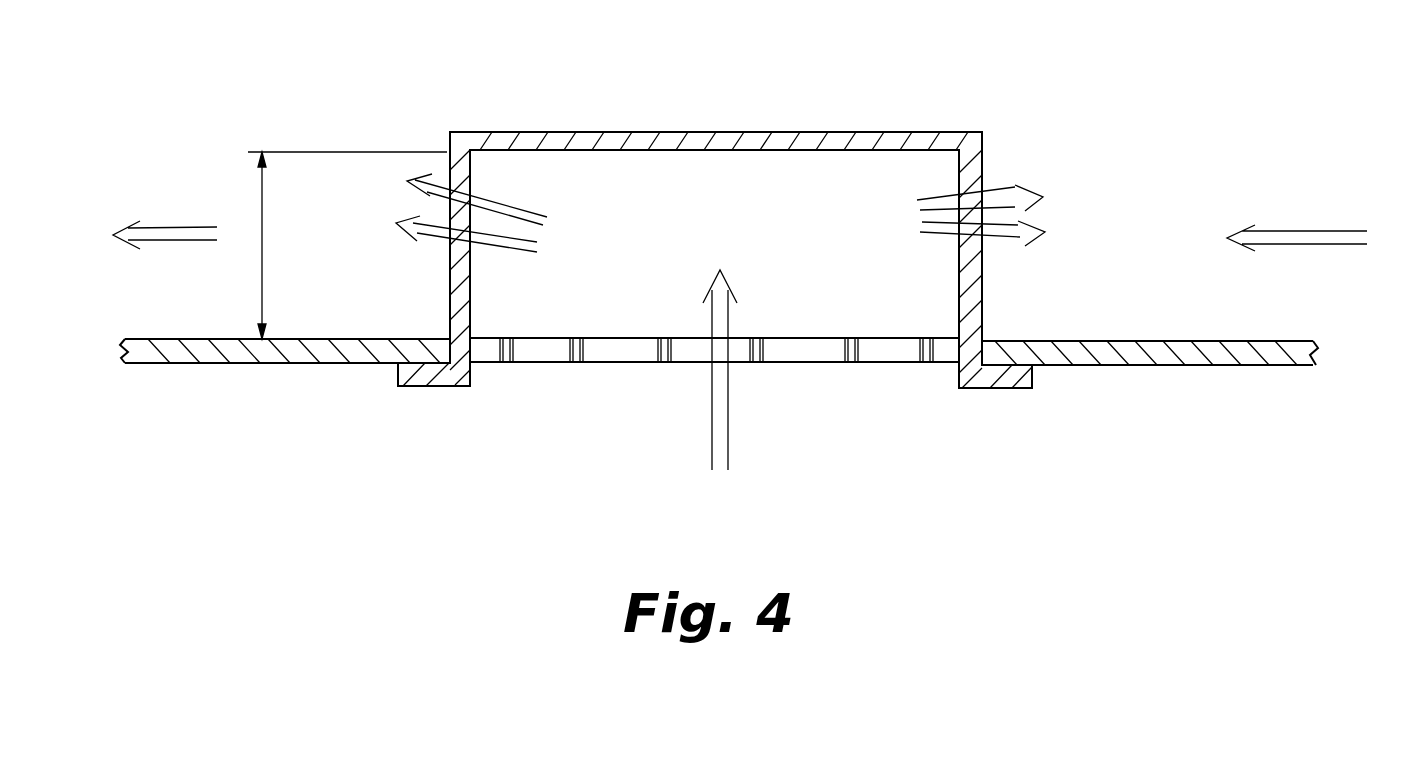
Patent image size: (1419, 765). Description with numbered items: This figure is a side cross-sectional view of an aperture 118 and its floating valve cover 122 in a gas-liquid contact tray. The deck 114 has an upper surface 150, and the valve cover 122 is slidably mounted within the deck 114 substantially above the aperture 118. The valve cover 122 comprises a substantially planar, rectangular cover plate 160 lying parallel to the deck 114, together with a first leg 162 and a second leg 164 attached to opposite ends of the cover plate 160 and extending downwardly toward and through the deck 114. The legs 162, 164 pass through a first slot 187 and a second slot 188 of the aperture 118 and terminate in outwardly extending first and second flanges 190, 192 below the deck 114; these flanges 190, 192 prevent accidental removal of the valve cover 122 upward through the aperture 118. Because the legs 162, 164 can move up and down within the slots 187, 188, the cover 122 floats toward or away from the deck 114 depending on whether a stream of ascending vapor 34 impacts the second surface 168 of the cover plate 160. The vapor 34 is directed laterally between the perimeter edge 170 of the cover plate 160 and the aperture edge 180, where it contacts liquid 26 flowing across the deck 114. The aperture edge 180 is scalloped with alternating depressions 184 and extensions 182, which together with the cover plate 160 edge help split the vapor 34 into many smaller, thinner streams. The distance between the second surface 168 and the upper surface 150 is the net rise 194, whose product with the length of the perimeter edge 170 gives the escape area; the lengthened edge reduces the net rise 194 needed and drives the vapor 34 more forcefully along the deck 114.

The liquid 26 is at (170, 227).
The ascending vapor 34 is at (720, 342).
The deck 114 is at (1281, 367).
The aperture 118 is at (793, 385).
The valve cover 122 is at (727, 249).
The upper surface 150 is at (1286, 341).
The cover plate 160 is at (853, 132).
The first leg 162 is at (452, 268).
The second leg 164 is at (984, 255).
The second surface 168 is at (710, 148).
The perimeter edge 170 is at (449, 143).
The aperture edge 180 is at (493, 358).
The extensions 182 is at (660, 363).
The depressions 184 is at (683, 338).
The first slot 187 is at (448, 341).
The second slot 188 is at (984, 340).
The first flange 190 is at (418, 386).
The second flange 192 is at (1015, 389).
The net rise 194 is at (345, 245).